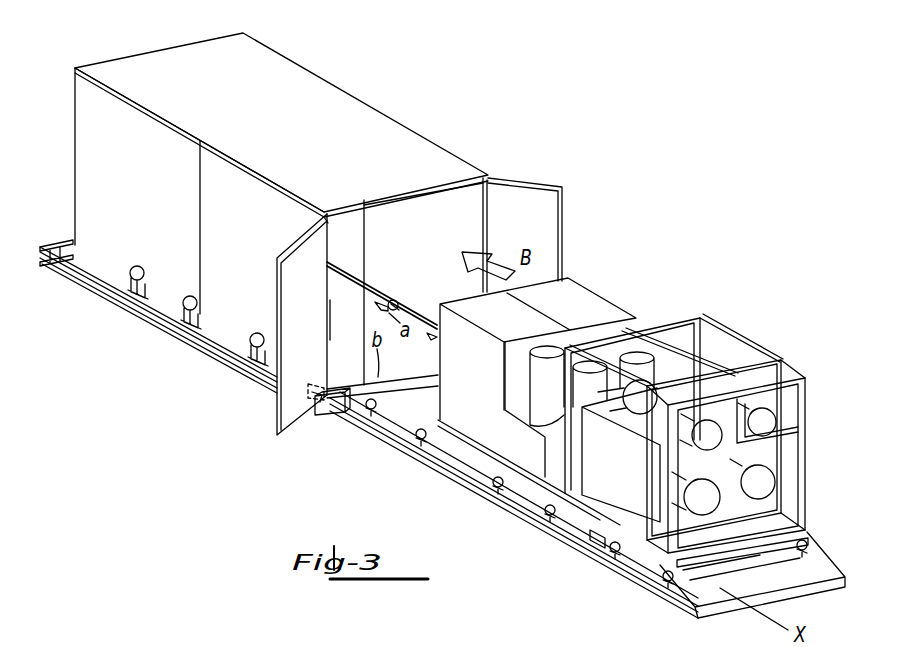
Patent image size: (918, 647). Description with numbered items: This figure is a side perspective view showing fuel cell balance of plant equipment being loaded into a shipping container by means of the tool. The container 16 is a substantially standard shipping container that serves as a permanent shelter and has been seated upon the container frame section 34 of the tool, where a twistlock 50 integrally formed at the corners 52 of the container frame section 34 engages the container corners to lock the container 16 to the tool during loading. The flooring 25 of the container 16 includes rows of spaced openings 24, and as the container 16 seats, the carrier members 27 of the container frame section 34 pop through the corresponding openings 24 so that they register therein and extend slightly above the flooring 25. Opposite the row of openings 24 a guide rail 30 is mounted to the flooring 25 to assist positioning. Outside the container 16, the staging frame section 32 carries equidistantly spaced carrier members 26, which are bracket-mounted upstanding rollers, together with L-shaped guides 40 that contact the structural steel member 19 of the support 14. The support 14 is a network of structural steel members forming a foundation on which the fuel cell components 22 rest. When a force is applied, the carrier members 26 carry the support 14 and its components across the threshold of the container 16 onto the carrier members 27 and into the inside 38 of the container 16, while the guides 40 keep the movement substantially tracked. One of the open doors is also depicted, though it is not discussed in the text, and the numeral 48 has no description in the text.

The support 14 is at (822, 432).
The container 16 is at (407, 60).
The structural steel member 19 is at (545, 510).
The fuel cell components 22 is at (641, 355).
The openings 24 is at (380, 302).
The flooring 25 is at (368, 326).
The carrier members 26 is at (500, 498).
The carrier members 27 is at (397, 302).
The guide rail 30 is at (410, 310).
The staging frame section 32 is at (655, 590).
The container frame section 34 is at (175, 318).
The inside 38 is at (456, 226).
The guides 40 is at (598, 548).
The door 48 is at (322, 319).
The twistlock 50 is at (320, 408).
The corners 52 is at (335, 416).